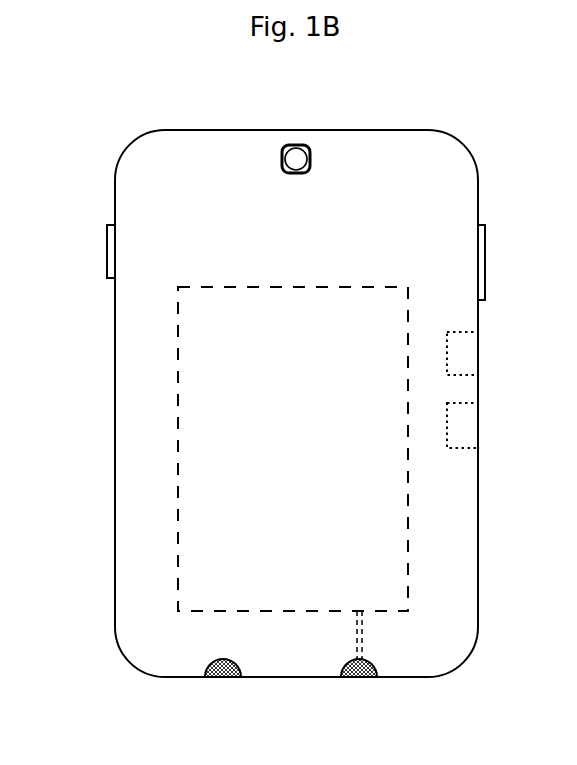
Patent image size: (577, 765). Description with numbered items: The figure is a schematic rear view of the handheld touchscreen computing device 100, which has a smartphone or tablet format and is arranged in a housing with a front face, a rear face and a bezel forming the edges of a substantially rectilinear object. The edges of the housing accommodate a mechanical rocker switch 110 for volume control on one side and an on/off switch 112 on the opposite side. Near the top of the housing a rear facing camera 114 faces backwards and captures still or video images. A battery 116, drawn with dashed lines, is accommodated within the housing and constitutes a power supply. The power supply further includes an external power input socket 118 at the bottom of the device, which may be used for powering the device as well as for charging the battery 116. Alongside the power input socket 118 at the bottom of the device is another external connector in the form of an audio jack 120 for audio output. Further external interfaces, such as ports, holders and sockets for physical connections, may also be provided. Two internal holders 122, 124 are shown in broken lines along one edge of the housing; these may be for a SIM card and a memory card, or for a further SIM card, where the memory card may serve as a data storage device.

The computing device 100 is at (136, 129).
The mechanical rocker switch 110 is at (487, 246).
The on/off switch 112 is at (105, 265).
The rear facing camera 114 is at (303, 143).
The battery 116 is at (225, 283).
The external power input socket 118 is at (355, 681).
The audio jack 120 is at (220, 681).
The internal holder 122 is at (478, 352).
The internal holder 124 is at (478, 425).